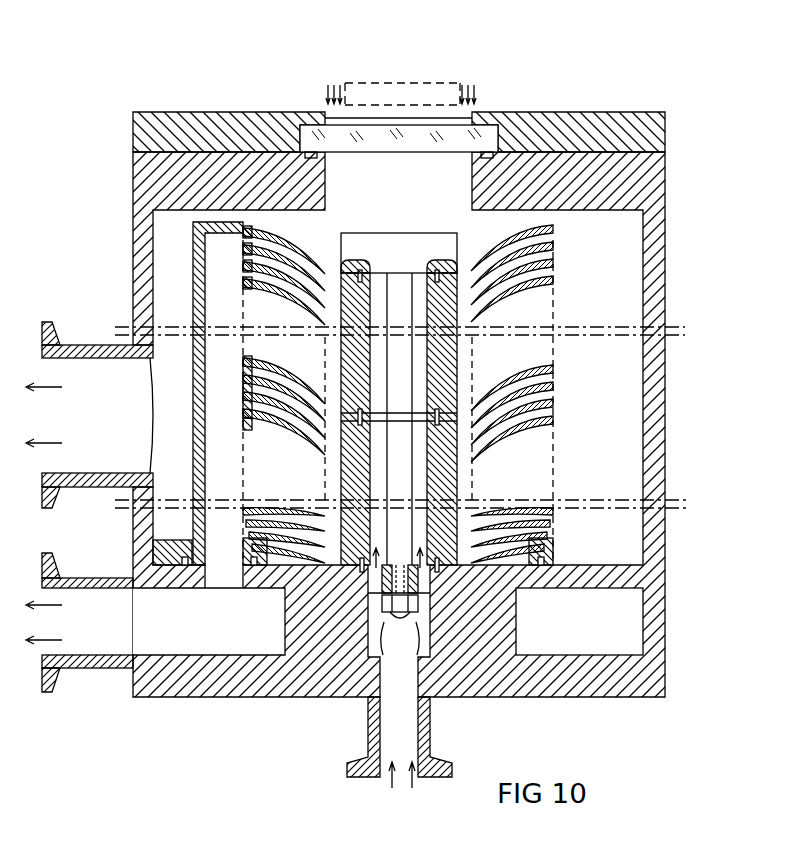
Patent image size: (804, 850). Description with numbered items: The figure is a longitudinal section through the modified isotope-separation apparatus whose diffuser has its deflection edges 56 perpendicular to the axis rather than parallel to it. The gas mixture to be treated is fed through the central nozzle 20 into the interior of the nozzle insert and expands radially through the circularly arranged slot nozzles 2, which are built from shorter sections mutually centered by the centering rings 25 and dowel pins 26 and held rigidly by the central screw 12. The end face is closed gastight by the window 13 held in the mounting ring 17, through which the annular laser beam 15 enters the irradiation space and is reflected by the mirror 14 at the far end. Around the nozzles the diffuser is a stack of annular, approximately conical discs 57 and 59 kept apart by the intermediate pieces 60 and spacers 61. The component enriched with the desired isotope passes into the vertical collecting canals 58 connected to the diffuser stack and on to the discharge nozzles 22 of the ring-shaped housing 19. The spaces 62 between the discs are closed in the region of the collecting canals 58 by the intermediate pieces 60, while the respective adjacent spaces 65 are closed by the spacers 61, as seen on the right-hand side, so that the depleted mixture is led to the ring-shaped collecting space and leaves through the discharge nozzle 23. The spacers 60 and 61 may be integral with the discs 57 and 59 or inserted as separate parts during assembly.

The slot nozzle 2 is at (342, 484).
The central screw 12 is at (405, 472).
The window 13 is at (492, 125).
The mirror 14 is at (320, 568).
The laser beam 15 is at (350, 82).
The mounting ring 17 is at (200, 120).
The ring-shaped housing 19 is at (150, 540).
The central nozzle 20 is at (352, 768).
The discharge nozzle 22 is at (48, 686).
The discharge nozzle 23 is at (50, 325).
The centering ring 25 is at (378, 273).
The dowel pin 26 is at (450, 262).
The deflection edge 56 is at (320, 270).
The annular conical disc 57 is at (283, 395).
The collecting canal 58 is at (213, 277).
The annular conical disc 59 is at (250, 427).
The intermediate piece 60 is at (243, 365).
The spacer 61 is at (552, 367).
The space 62 is at (249, 383).
The adjacent space 65 is at (533, 382).